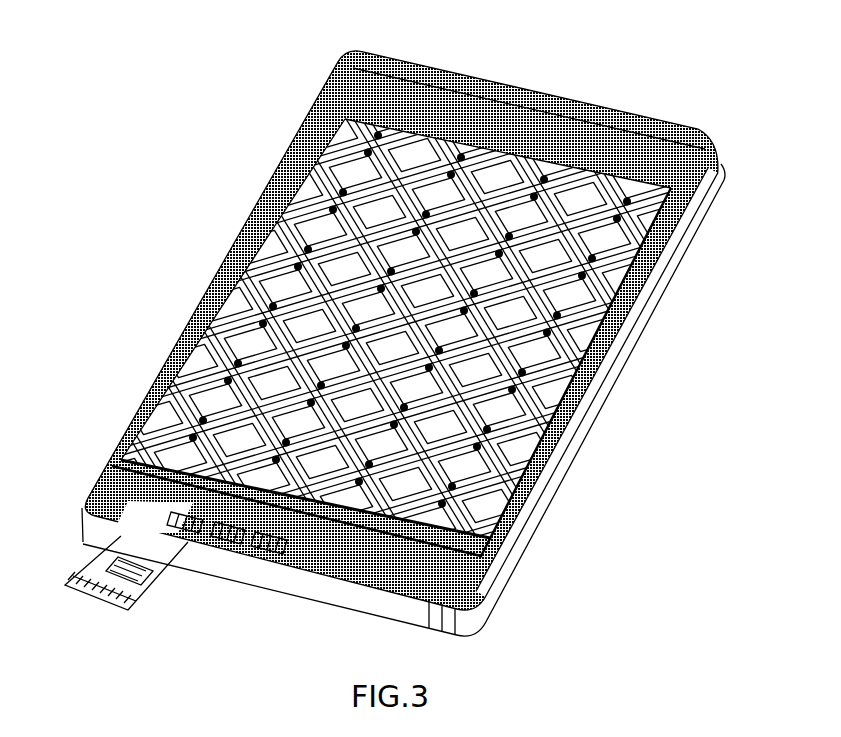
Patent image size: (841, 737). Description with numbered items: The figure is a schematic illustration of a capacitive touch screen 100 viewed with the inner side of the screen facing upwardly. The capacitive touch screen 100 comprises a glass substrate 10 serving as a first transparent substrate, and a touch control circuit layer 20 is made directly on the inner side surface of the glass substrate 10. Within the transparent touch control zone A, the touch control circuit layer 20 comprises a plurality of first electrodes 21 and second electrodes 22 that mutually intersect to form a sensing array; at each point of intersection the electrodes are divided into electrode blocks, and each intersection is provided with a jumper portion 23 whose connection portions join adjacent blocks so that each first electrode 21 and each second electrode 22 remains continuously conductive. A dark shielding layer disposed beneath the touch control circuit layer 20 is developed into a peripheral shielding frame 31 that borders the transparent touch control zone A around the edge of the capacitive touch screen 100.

The capacitive touch screen 100 is at (372, 33).
The glass substrate 10 is at (200, 283).
The transparent touch control zone A is at (242, 211).
The touch control circuit layer 20 is at (643, 465).
The first electrode 21 is at (548, 448).
The second electrode 22 is at (467, 463).
The jumper portion 23 is at (540, 477).
The peripheral shielding frame 31 is at (455, 560).